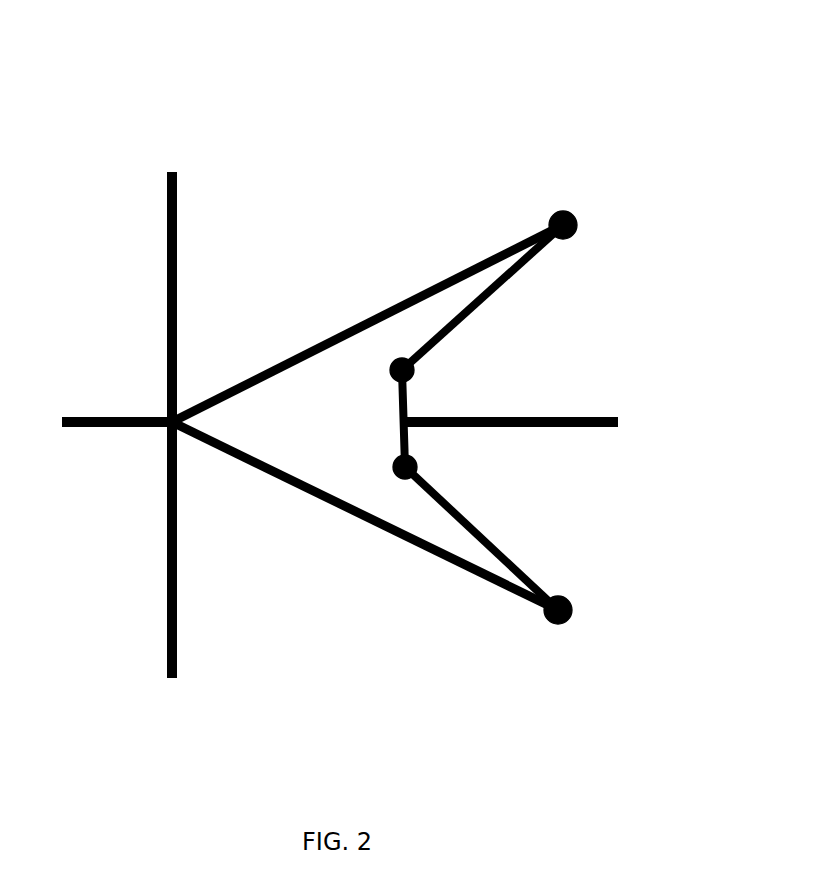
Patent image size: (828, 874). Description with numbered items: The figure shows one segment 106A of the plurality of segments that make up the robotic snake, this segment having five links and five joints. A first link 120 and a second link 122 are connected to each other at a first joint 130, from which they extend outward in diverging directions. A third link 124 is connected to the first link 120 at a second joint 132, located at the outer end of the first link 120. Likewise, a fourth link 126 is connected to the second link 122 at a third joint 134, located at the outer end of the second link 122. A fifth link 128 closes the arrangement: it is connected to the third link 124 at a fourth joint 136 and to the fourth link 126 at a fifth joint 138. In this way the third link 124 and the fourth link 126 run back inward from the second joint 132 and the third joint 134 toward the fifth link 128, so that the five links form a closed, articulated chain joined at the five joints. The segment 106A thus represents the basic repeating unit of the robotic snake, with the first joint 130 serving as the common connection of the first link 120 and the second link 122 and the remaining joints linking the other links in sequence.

The segment 106A is at (456, 95).
The first link 120 is at (357, 322).
The second link 122 is at (368, 526).
The third link 124 is at (518, 272).
The fourth link 126 is at (511, 555).
The fifth link 128 is at (412, 410).
The first joint 130 is at (160, 428).
The second joint 132 is at (577, 215).
The third joint 134 is at (565, 597).
The fourth joint 136 is at (413, 362).
The fifth joint 138 is at (425, 470).